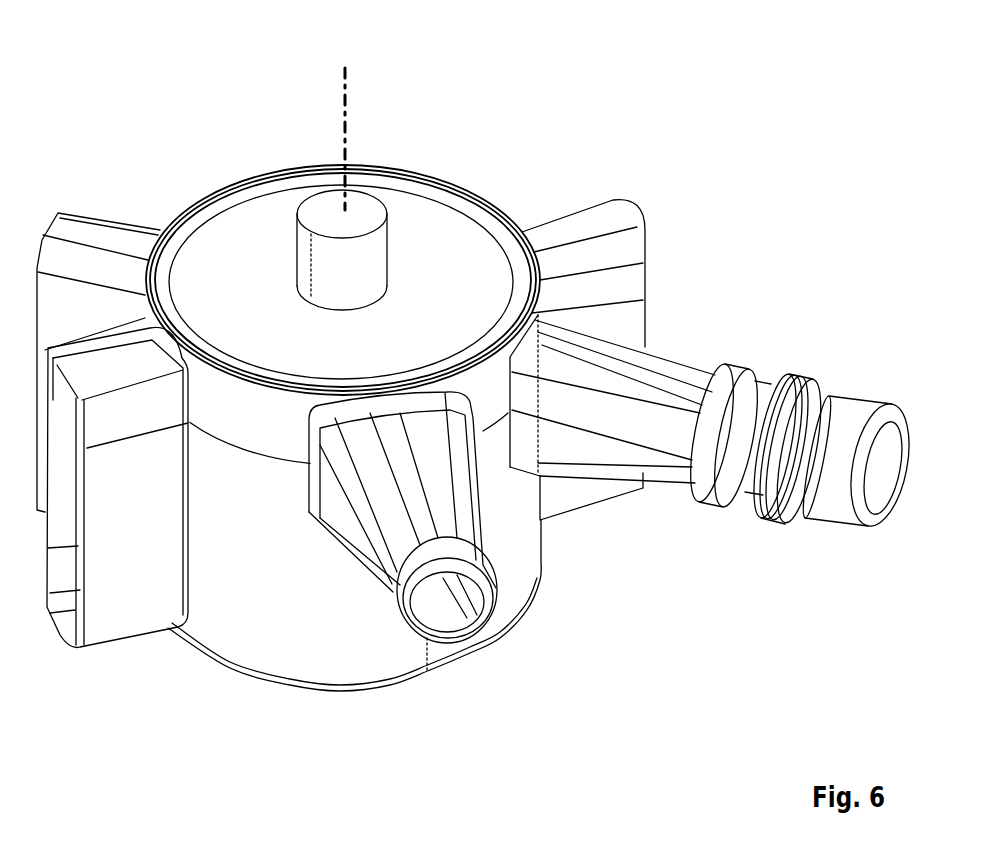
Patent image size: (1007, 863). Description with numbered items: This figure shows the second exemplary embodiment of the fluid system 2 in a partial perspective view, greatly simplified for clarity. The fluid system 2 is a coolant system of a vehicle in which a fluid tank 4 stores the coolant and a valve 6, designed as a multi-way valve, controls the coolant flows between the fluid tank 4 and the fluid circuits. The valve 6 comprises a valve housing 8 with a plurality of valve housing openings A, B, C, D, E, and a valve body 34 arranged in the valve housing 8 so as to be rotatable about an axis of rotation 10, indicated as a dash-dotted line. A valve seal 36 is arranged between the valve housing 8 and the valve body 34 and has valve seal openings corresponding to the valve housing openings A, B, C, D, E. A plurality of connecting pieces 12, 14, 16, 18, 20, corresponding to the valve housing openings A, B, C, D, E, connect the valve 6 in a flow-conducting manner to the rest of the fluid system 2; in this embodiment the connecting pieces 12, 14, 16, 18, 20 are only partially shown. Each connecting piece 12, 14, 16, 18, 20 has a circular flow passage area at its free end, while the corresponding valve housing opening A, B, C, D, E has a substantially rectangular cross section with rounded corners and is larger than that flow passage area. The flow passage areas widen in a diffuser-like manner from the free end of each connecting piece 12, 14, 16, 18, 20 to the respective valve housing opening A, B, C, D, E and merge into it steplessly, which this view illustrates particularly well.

The fluid system 2 is at (854, 90).
The fluid tank 4 is at (779, 132).
The valve 6 is at (507, 705).
The valve housing 8 is at (244, 657).
The axis of rotation 10 is at (347, 100).
The connecting piece 12 is at (93, 640).
The connecting piece 14 is at (413, 633).
The connecting piece 16 is at (680, 370).
The connecting piece 18 is at (613, 222).
The connecting piece 20 is at (68, 230).
The valve body 34 is at (276, 220).
The valve seal 36 is at (212, 195).
The valve housing opening A is at (143, 215).
The valve housing opening B is at (160, 650).
The valve housing opening C is at (326, 572).
The valve housing opening D is at (550, 492).
The valve housing opening E is at (549, 195).